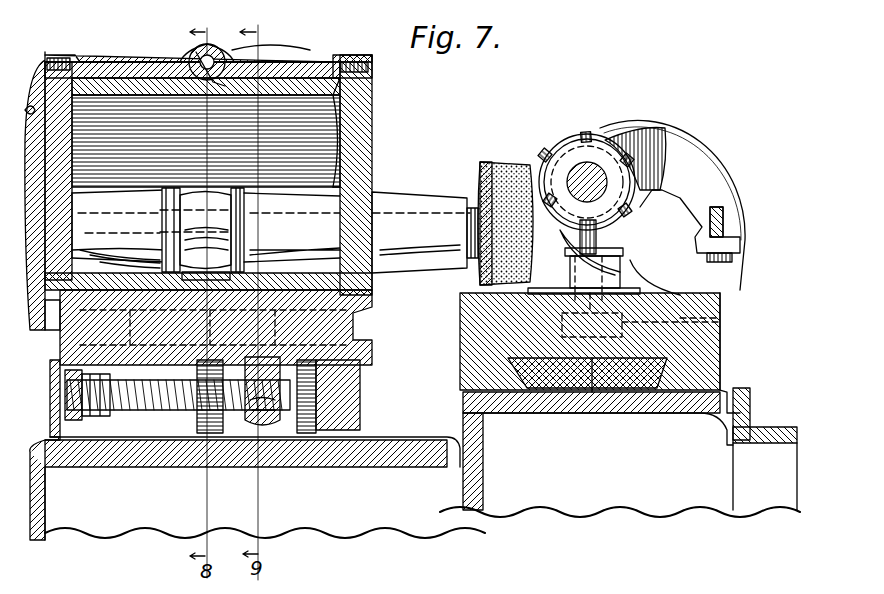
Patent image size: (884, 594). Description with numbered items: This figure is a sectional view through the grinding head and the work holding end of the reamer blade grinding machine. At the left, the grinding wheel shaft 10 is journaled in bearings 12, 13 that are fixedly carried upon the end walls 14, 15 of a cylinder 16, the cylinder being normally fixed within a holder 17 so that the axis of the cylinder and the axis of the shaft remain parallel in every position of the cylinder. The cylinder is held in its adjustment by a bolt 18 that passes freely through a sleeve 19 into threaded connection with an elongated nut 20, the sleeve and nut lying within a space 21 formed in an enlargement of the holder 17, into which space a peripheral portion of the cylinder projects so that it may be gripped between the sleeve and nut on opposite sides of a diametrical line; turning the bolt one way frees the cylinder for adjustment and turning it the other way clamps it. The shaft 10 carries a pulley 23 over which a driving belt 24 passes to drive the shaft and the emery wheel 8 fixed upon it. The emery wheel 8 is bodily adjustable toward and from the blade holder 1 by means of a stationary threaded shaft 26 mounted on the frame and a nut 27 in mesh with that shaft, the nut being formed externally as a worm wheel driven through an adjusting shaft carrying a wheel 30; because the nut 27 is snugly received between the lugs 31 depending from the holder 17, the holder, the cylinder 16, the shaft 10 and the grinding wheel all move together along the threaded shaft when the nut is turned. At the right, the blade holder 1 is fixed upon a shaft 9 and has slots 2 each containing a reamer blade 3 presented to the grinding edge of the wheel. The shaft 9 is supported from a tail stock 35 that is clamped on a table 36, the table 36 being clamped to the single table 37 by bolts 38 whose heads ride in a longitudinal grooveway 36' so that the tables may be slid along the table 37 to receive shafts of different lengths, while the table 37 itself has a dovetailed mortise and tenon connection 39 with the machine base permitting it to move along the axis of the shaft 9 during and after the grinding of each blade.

The blade holder 1 is at (610, 155).
The slots 2 is at (558, 150).
The reamer blade 3 is at (628, 160).
The emery wheel 8 is at (513, 193).
The shaft 9 is at (590, 170).
The grinding wheel shaft 10 is at (415, 215).
The bearing 12 is at (100, 205).
The bearing 13 is at (335, 215).
The end wall 14 is at (72, 130).
The end wall 15 is at (340, 140).
The cylinder 16 is at (302, 88).
The holder 17 is at (100, 62).
The bolt 18 is at (178, 102).
The sleeve 19 is at (200, 52).
The elongated nut 20 is at (330, 148).
The space 21 is at (222, 36).
The pulley 23 is at (172, 188).
The driving belt 24 is at (225, 160).
The stationary threaded shaft 26 is at (178, 410).
The nut 27 is at (262, 425).
The wheel 30 is at (275, 48).
The lugs 31 is at (228, 420).
The tail stocks 35 is at (723, 150).
The tables 36 is at (712, 239).
The bracket slot 36' is at (726, 315).
The table 37 is at (722, 354).
The bolts 38 is at (648, 255).
The dovetailed mortise and tenon connection 39 is at (597, 412).